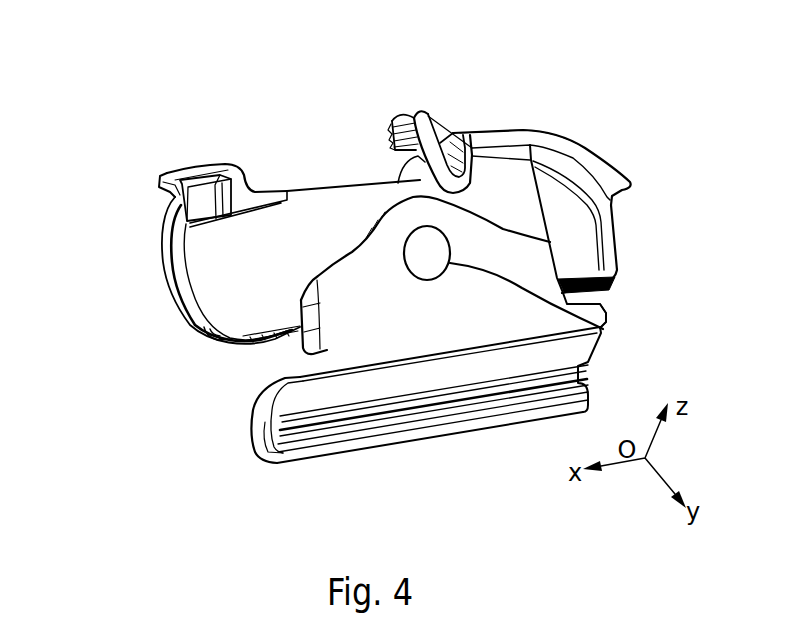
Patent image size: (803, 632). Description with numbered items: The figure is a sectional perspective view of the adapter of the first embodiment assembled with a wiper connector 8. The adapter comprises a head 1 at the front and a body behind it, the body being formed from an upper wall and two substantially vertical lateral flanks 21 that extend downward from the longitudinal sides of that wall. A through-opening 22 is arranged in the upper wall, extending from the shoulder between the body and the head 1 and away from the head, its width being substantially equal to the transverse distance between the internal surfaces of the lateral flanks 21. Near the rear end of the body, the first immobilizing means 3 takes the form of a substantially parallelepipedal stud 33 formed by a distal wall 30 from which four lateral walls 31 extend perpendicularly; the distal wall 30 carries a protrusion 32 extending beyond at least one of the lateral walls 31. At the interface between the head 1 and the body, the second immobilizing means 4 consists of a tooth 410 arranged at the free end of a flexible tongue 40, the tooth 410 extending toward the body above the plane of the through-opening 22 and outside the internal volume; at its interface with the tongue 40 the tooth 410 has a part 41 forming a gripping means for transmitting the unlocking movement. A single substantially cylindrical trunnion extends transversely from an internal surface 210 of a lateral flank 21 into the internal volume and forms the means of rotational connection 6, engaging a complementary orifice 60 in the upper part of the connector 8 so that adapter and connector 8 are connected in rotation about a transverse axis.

The head 1 is at (580, 127).
The first immobilizing means 3 is at (232, 243).
The second immobilizing means 4 is at (429, 99).
The means of rotational connection 6 is at (463, 253).
The connector 8 is at (335, 364).
The lateral flanks 21 is at (196, 323).
The through-opening 22 is at (320, 188).
The distal wall 30 is at (193, 166).
The lateral walls 31 is at (170, 200).
The protrusion 32 is at (158, 181).
The stud 33 is at (213, 163).
The flexible tongue 40 is at (472, 142).
The part forming a gripping means 41 is at (418, 120).
The tooth 410 is at (380, 89).
The orifice 60 is at (603, 327).
The internal surface 210 is at (240, 290).